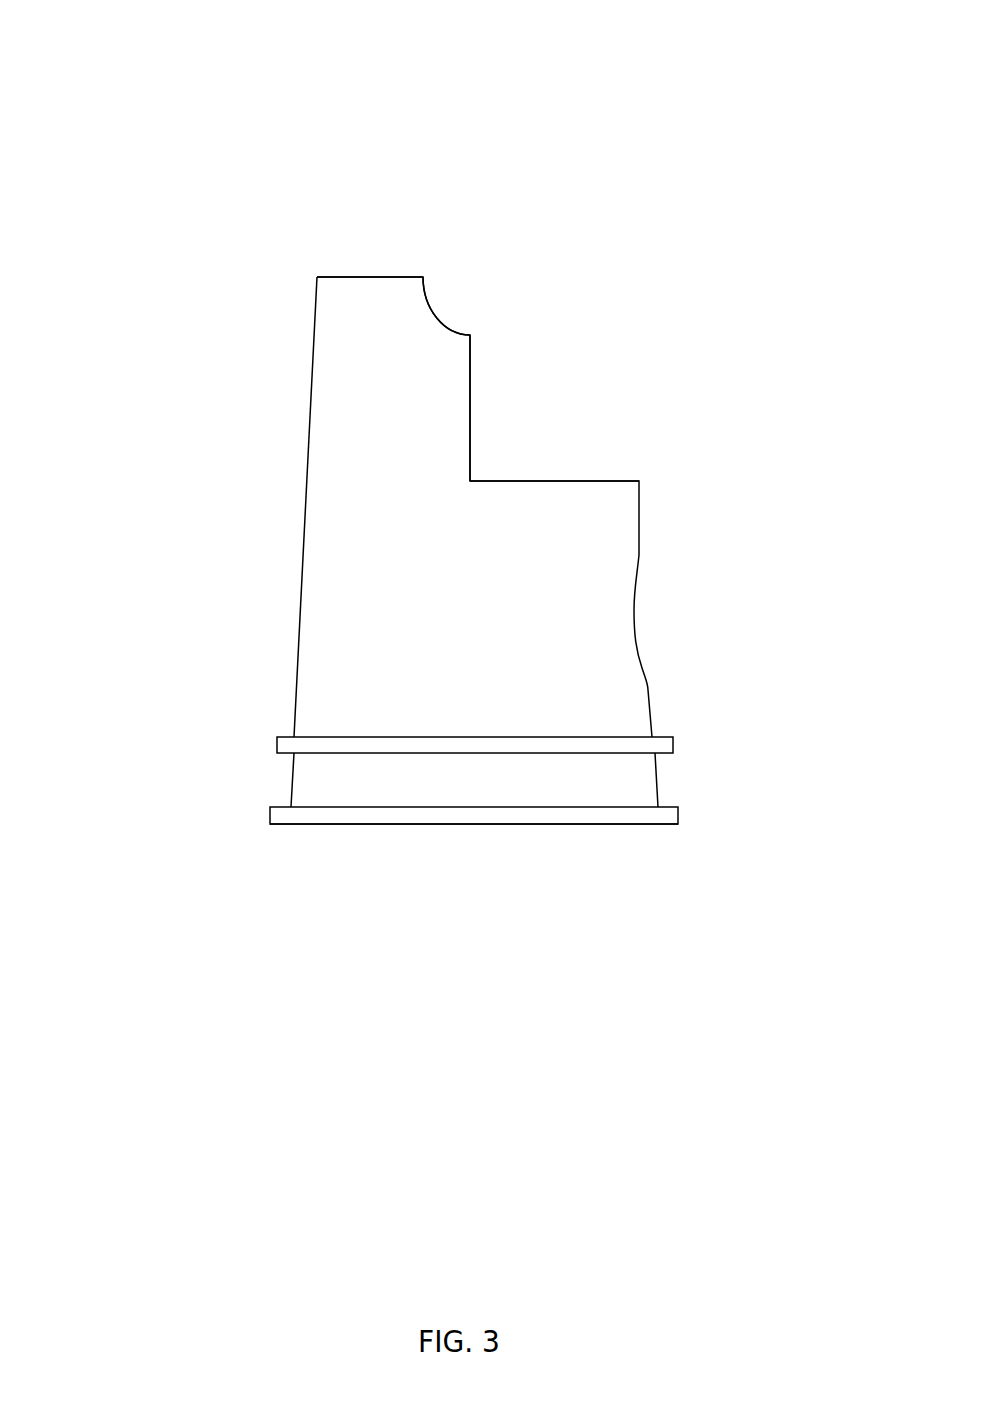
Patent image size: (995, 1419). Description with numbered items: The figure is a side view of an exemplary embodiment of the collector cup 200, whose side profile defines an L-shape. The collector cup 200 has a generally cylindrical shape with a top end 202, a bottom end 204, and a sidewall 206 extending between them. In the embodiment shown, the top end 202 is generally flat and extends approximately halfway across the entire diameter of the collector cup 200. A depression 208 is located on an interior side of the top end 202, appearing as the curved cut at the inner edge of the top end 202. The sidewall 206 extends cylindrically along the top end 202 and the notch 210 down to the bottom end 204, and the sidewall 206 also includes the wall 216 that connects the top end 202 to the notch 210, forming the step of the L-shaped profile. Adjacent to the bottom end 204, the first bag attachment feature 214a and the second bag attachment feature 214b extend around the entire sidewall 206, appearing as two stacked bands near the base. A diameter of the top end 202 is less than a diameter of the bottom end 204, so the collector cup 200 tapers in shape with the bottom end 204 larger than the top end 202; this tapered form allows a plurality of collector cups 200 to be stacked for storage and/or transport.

The collector cup 200 is at (121, 64).
The top end 202 is at (345, 275).
The bottom end 204 is at (365, 824).
The sidewall 206 is at (410, 557).
The depression 208 is at (452, 290).
The notch 210 is at (557, 485).
The first bag attachment feature 214a is at (592, 744).
The second bag attachment feature 214b is at (660, 817).
The wall 216 is at (478, 358).